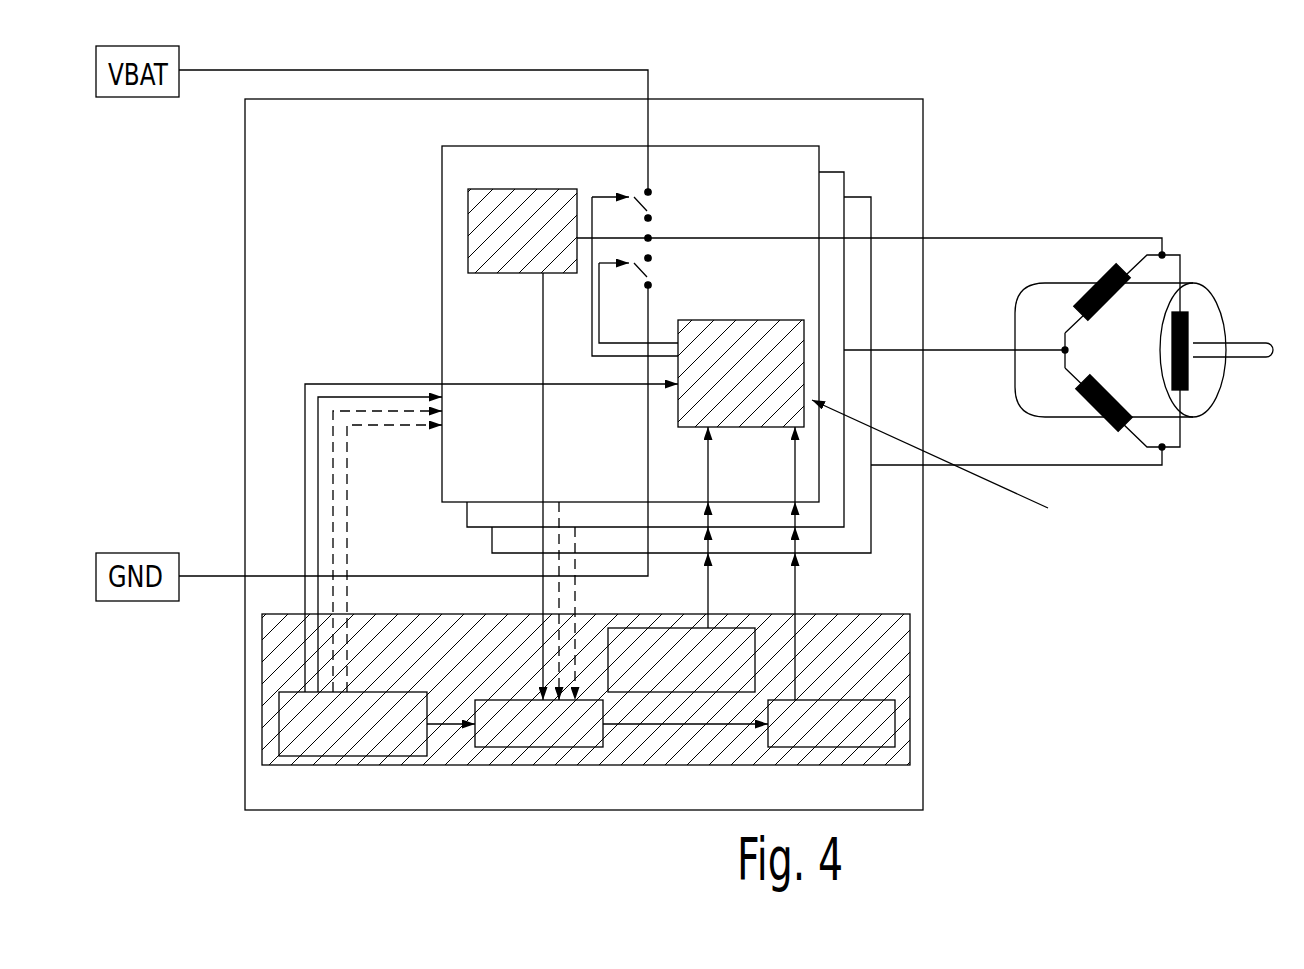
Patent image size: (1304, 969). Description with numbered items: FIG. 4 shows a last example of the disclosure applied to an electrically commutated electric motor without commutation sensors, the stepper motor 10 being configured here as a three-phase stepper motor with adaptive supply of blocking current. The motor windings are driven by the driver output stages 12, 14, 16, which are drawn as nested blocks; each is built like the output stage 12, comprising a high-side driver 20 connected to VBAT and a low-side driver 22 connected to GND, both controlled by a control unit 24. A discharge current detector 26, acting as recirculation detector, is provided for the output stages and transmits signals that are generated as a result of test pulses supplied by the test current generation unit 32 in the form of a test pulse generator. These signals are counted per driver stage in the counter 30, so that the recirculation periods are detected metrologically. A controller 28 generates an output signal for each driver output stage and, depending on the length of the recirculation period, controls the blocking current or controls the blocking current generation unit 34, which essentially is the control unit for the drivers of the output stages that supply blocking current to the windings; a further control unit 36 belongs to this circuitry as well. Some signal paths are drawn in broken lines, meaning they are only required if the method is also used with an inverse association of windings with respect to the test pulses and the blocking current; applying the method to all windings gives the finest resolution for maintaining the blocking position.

The stepper motor 10 is at (1163, 220).
The driver output stage 12 is at (803, 159).
The driver output stage 14 is at (833, 193).
The driver output stage 16 is at (858, 220).
The high-side driver 20 is at (652, 203).
The low-side driver 22 is at (633, 262).
The control unit 24 is at (740, 367).
The discharge current detector 26 is at (492, 228).
The controller 28 is at (860, 728).
The counter 30 is at (563, 737).
The test current generation unit 32 is at (343, 737).
The blocking current generation unit 34 is at (949, 471).
The control unit 36 is at (722, 658).